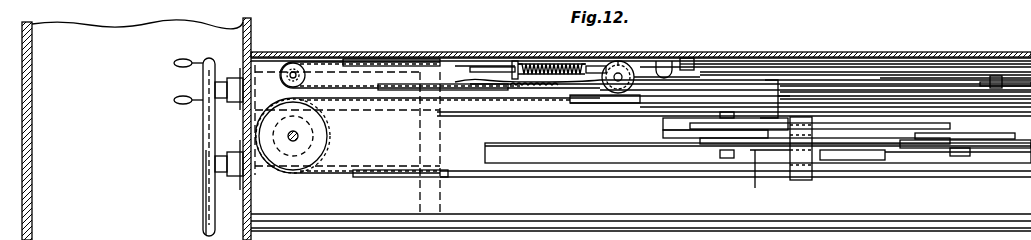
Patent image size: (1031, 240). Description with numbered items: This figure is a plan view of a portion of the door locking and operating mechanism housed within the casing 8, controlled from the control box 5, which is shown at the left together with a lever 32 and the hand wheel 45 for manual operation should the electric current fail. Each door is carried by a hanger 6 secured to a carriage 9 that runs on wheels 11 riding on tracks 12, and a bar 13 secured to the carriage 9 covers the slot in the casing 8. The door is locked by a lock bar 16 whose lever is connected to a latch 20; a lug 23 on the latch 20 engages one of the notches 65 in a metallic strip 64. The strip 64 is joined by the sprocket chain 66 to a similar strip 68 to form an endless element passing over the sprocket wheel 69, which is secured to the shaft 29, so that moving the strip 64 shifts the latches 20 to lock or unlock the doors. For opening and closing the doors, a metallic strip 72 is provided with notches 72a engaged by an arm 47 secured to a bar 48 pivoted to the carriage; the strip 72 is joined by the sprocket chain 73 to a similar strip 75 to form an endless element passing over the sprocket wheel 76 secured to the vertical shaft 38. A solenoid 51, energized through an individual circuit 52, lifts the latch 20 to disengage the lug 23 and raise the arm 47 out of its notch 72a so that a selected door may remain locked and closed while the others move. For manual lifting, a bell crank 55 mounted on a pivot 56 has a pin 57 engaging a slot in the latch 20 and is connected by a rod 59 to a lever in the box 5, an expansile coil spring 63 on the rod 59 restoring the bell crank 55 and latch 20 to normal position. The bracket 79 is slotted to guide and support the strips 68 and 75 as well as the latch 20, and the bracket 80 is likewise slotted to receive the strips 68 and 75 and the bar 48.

The control box 5 is at (33, 56).
The hand lever 32 is at (222, 55).
The hand wheel 45 is at (207, 186).
The casing 8 is at (422, 54).
The shaft 29 is at (292, 73).
The sprocket wheel 69 is at (298, 72).
The sprocket chain 66 is at (337, 61).
The sprocket wheel 76 is at (320, 146).
The vertical shaft 38 is at (297, 135).
The sprocket chain 73 is at (310, 178).
The metallic strip 72 is at (540, 174).
The rod 59 is at (478, 67).
The expansile coil spring 63 is at (528, 62).
The individual circuit 52 is at (470, 86).
The pivot 56 is at (596, 66).
The solenoid 51 is at (620, 70).
The bell crank 55 is at (610, 66).
The pin 57 is at (640, 74).
The bracket 79 is at (664, 61).
The lug 23 is at (687, 58).
The notches 65 is at (700, 62).
The bracket 80 is at (775, 80).
The metallic strip 68 is at (825, 90).
The metallic strip 75 is at (852, 98).
The metallic strip 64 is at (910, 62).
The latch 20 is at (950, 76).
The lock bar 16 is at (998, 76).
The bar 48 is at (515, 118).
The bar 13 is at (568, 152).
The tracks 12 is at (670, 132).
The wheels 11 is at (722, 128).
The notches 72a is at (790, 172).
The arm 47 is at (805, 168).
The hanger 6 is at (852, 160).
The carriage 9 is at (912, 150).